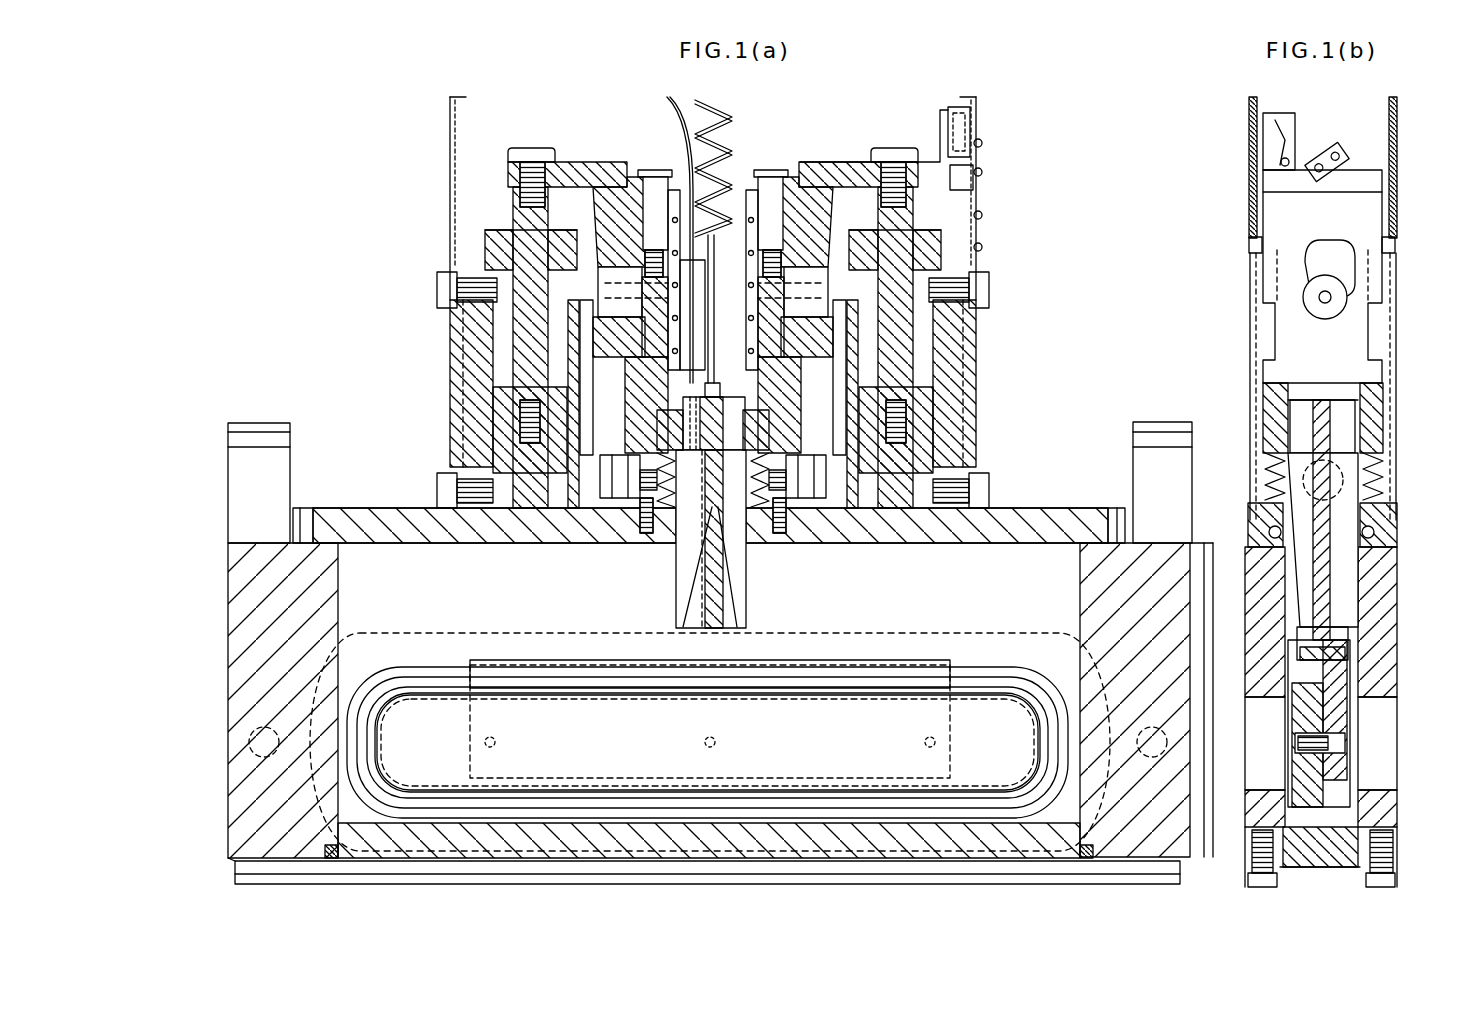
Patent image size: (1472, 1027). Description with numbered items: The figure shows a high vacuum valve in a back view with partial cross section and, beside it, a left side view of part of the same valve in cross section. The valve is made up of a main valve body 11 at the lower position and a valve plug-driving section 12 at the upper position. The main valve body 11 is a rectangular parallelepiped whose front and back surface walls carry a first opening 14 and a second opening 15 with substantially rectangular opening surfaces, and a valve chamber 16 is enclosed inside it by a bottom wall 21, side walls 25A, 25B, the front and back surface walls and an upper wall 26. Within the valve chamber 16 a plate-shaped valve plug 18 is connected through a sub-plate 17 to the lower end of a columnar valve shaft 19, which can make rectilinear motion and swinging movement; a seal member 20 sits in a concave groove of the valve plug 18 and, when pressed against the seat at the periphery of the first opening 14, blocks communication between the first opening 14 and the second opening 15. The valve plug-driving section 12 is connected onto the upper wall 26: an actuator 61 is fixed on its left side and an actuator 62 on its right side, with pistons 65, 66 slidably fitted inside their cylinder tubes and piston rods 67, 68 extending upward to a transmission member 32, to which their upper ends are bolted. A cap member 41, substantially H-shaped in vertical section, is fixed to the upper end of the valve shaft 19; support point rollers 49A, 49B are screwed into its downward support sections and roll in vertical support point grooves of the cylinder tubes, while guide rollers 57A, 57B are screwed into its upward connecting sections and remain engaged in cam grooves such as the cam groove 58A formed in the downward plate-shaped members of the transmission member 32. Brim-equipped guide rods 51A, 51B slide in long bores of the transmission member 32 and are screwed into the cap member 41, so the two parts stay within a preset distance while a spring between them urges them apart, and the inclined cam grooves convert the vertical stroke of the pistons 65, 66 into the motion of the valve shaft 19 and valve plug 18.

In FIG. 1A, the main valve body 11 is at (226, 876).
In FIG. 1B, the main valve body 11 is at (1240, 896).
In FIG. 1A, the valve plug-driving section 12 is at (1005, 141).
In FIG. 1B, the valve plug-driving section 12 is at (1410, 137).
In FIG. 1B, the first opening 14 is at (1248, 775).
In FIG. 1B, the second opening 15 is at (1385, 752).
In FIG. 1B, the valve chamber 16 is at (1330, 835).
In FIG. 1A, the sub-plate 17 is at (915, 660).
In FIG. 1B, the sub-plate 17 is at (1345, 683).
In FIG. 1A, the valve plug 18 is at (1035, 700).
In FIG. 1B, the valve plug 18 is at (1305, 815).
In FIG. 1A, the valve shaft 19 is at (680, 585).
In FIG. 1B, the valve shaft 19 is at (1355, 587).
In FIG. 1A, the seal member 20 is at (990, 680).
In FIG. 1A, the bottom wall 21 is at (447, 878).
In FIG. 1A, the side wall 25A is at (240, 583).
In FIG. 1A, the side wall 25B is at (1185, 560).
In FIG. 1A, the upper wall 26 is at (1045, 525).
In FIG. 1A, the transmission member 32 is at (832, 170).
In FIG. 1B, the transmission member 32 is at (1390, 214).
In FIG. 1A, the cap member 41 is at (800, 412).
In FIG. 1B, the cap member 41 is at (1375, 341).
In FIG. 1A, the support point roller 49A is at (612, 500).
In FIG. 1A, the support point roller 49B is at (818, 500).
In FIG. 1A, the guide rod 51A is at (660, 175).
In FIG. 1A, the guide rod 51B is at (772, 175).
In FIG. 1A, the guide roller 57A is at (592, 175).
In FIG. 1B, the guide roller 57A is at (1315, 312).
In FIG. 1A, the guide roller 57B is at (822, 272).
In FIG. 1B, the cam groove 58A is at (1300, 258).
In FIG. 1A, the actuator 61 is at (490, 341).
In FIG. 1A, the actuator 62 is at (940, 339).
In FIG. 1A, the piston 65 is at (490, 455).
In FIG. 1A, the piston 66 is at (935, 455).
In FIG. 1A, the piston rod 67 is at (513, 220).
In FIG. 1A, the piston rod 68 is at (912, 232).